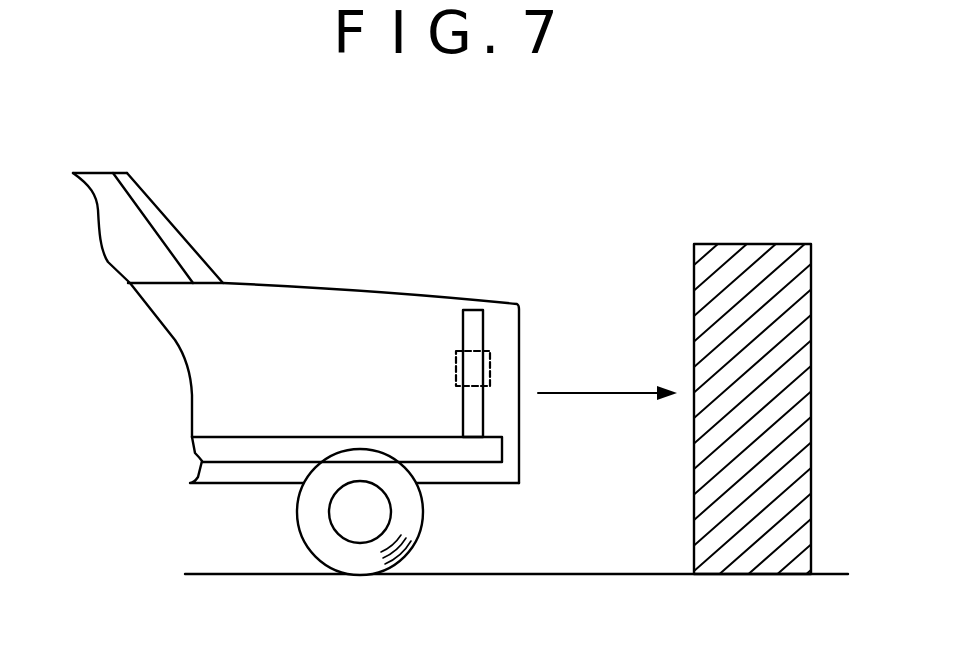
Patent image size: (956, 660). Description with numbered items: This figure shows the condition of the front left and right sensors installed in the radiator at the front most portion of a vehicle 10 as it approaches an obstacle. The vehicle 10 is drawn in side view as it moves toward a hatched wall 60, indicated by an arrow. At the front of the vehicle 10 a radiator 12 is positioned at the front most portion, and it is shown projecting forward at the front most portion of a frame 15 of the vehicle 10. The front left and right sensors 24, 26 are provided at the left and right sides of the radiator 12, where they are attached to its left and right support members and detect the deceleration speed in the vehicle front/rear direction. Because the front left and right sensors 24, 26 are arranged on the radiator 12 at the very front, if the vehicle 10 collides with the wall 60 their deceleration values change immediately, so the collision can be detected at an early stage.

The vehicle 10 is at (370, 281).
The radiator 12 is at (470, 317).
The frame 15 is at (462, 452).
The left front sensor 24 is at (562, 344).
The right front sensor 26 is at (562, 344).
The wall 60 is at (742, 244).